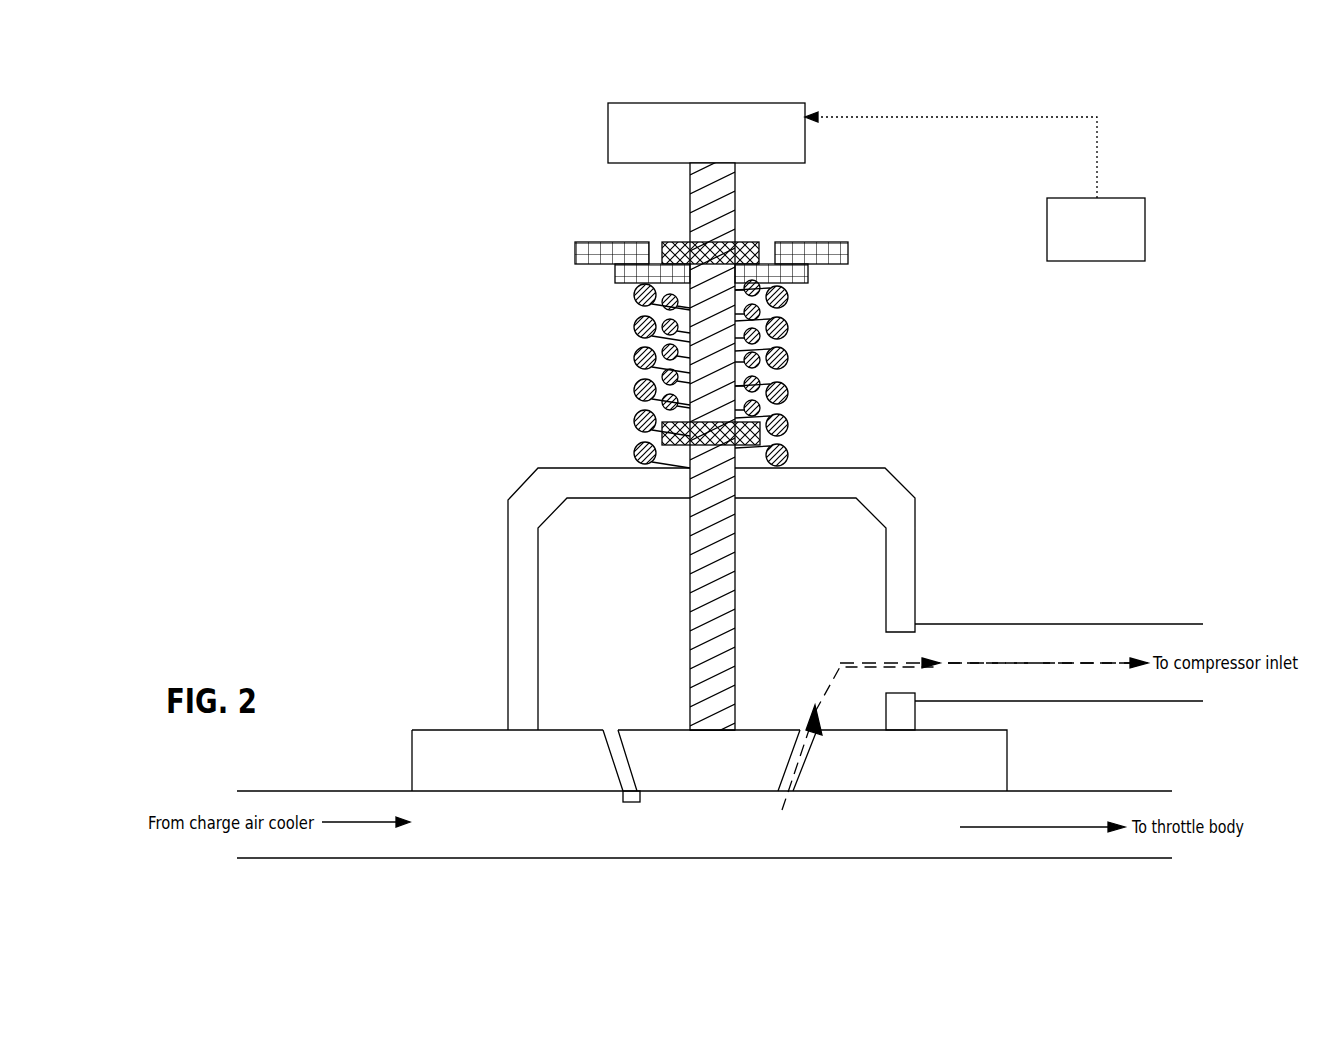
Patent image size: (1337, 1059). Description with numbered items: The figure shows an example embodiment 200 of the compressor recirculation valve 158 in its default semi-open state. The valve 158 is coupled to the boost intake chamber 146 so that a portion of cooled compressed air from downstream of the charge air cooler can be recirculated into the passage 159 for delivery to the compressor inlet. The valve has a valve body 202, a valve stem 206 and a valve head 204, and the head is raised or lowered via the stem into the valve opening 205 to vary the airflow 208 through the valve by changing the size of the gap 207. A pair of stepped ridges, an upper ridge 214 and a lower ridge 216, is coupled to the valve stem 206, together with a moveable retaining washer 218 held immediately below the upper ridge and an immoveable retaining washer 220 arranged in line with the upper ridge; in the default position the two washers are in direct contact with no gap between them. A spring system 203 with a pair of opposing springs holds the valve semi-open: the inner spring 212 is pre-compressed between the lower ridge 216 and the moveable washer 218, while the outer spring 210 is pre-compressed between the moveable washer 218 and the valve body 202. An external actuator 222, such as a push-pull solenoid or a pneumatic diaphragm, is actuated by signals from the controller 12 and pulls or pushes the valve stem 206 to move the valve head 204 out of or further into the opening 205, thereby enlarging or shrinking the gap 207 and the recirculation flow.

The controller 12 is at (975, 186).
The boost intake chamber 146 is at (510, 858).
The compressor recirculation valve 158 is at (425, 240).
The passage 159 is at (1020, 623).
The embodiment 200 is at (1242, 150).
The valve body 202 is at (906, 480).
The spring system 203 is at (818, 333).
The valve head 204 is at (682, 730).
The valve opening 205 is at (610, 730).
The valve stem 206 is at (738, 620).
The gap 207 is at (631, 802).
The airflow 208 is at (870, 663).
The outer spring 210 is at (780, 432).
The inner spring 212 is at (752, 386).
The upper ridge 214 is at (675, 248).
The lower ridge 216 is at (668, 422).
The moveable retaining washer 218 is at (632, 284).
The immoveable retaining washer 220 is at (818, 244).
The external actuator 222 is at (706, 133).